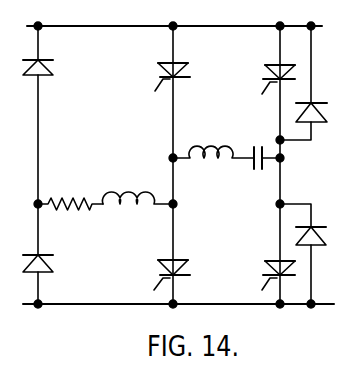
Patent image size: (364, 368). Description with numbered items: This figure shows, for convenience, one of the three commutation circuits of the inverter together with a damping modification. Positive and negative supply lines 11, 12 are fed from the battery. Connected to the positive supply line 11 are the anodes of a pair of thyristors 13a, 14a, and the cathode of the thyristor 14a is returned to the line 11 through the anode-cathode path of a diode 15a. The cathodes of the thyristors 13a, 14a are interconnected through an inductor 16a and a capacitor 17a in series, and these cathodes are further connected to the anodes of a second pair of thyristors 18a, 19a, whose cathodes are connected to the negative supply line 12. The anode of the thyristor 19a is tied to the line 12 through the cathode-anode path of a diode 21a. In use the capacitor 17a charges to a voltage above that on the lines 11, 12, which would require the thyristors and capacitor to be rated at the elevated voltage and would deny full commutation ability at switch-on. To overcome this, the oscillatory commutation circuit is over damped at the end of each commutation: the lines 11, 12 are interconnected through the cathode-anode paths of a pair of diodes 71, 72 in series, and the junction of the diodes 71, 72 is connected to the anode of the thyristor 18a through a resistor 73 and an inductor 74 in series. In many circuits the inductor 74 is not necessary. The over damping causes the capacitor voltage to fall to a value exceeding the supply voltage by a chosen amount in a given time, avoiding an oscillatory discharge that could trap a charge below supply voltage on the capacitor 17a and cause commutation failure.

The positive supply line 11 is at (216, 25).
The negative supply line 12 is at (255, 306).
The thyristor 13a is at (158, 72).
The thyristor 14a is at (265, 73).
The diode 15a is at (328, 114).
The inductor 16a is at (208, 147).
The capacitor 17a is at (255, 171).
The thyristor 18a is at (158, 264).
The thyristor 19a is at (264, 272).
The diode 21a is at (339, 219).
The diode 71 is at (54, 73).
The diode 72 is at (53, 270).
The resistor 73 is at (68, 193).
The inductor 74 is at (152, 193).